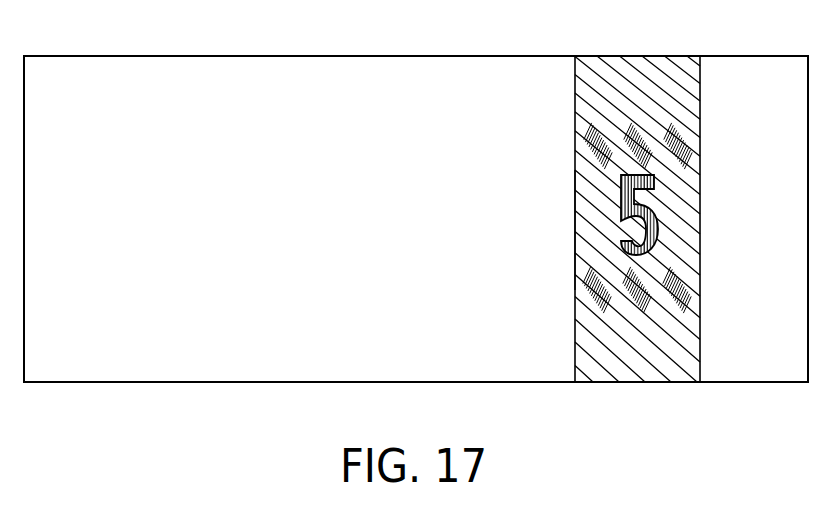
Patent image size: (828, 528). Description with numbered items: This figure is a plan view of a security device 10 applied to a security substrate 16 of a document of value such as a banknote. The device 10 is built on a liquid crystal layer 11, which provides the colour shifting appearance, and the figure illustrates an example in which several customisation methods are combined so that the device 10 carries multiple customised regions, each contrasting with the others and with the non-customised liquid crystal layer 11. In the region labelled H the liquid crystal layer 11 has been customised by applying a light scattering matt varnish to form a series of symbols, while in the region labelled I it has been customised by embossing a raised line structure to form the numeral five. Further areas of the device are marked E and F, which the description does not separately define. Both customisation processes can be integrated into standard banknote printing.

The security device 10 is at (657, 56).
The liquid crystal layer 11 is at (676, 343).
The security substrate 16 is at (67, 382).
The customised region H is at (596, 134).
The hatched region boundary E is at (586, 225).
The lower micro-pattern elements F is at (586, 281).
The customised region I is at (652, 221).